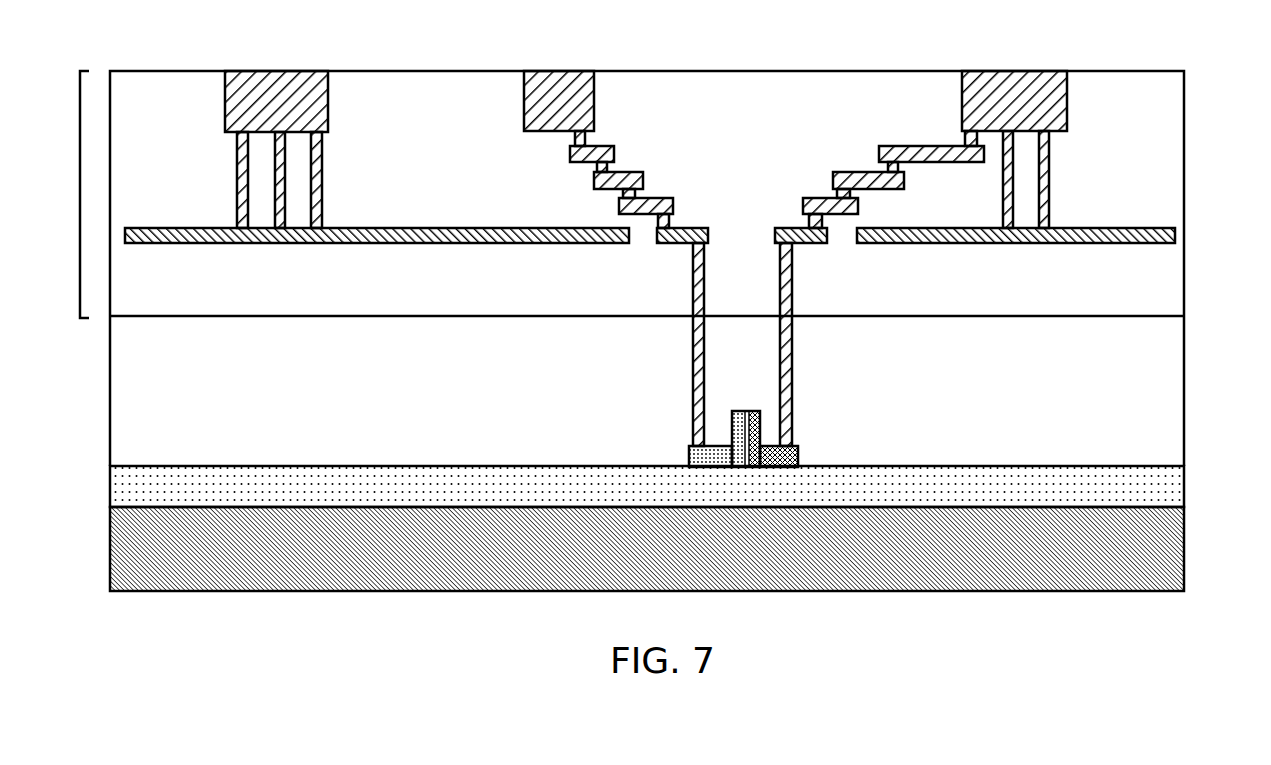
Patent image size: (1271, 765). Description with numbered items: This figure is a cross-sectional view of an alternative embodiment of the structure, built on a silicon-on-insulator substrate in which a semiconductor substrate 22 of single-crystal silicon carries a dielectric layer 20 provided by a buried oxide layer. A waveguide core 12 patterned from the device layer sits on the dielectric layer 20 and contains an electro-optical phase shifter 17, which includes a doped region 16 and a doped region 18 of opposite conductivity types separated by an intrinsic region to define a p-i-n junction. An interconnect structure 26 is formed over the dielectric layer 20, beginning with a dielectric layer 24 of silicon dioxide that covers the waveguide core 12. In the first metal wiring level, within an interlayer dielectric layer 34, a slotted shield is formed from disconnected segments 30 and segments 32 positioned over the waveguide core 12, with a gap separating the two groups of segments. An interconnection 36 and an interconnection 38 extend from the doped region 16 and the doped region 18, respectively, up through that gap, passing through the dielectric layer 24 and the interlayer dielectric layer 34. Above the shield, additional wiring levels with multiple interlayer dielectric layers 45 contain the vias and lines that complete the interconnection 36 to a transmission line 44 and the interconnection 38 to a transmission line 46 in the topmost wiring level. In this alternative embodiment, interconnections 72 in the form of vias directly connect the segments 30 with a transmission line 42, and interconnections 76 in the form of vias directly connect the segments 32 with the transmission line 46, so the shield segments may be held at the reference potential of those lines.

The waveguide core 12 is at (715, 399).
The doped region 16 is at (708, 458).
The electro-optical phase shifter 17 is at (749, 402).
The doped region 18 is at (770, 457).
The dielectric layer 20 is at (1150, 472).
The semiconductor substrate 22 is at (1150, 540).
The dielectric layer 24 is at (1150, 393).
The interconnect structure 26 is at (80, 195).
The segments 30 is at (381, 248).
The segments 32 is at (1067, 247).
The interlayer dielectric layer 34 is at (1150, 285).
The interconnection 36 is at (695, 297).
The interconnection 38 is at (790, 300).
The transmission line 42 is at (297, 97).
The transmission line 44 is at (540, 98).
The interlayer dielectric layers 45 is at (1150, 186).
The transmission line 46 is at (992, 102).
The interconnections 72 is at (277, 198).
The interconnections 76 is at (1043, 198).